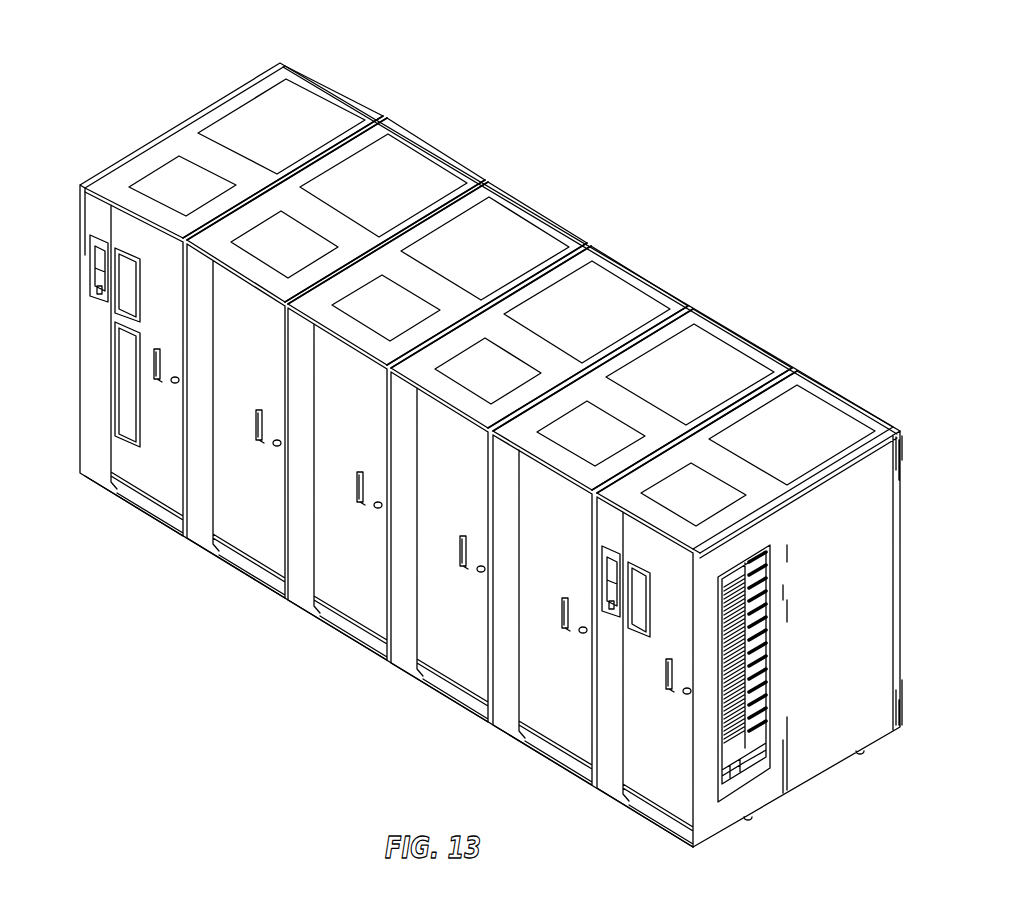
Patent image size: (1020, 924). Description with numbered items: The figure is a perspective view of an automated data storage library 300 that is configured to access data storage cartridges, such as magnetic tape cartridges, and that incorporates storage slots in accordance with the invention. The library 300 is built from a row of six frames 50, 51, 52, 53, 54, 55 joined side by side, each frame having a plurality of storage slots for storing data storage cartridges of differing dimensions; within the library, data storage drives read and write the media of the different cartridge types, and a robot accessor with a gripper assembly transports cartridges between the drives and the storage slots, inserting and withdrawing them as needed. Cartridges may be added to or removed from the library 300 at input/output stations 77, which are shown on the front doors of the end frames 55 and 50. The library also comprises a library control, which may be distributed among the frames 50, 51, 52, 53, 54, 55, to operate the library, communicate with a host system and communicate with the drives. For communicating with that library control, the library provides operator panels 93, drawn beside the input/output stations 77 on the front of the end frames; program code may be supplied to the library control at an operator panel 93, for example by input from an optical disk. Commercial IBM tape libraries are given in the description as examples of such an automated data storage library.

The automated data storage library 300 is at (592, 76).
The frame 50 is at (842, 392).
The frame 51 is at (733, 329).
The frame 52 is at (646, 274).
The frame 53 is at (548, 213).
The frame 54 is at (425, 137).
The frame 55 is at (342, 88).
The input/output station 77 is at (133, 294).
The operator panel 93 is at (90, 256).